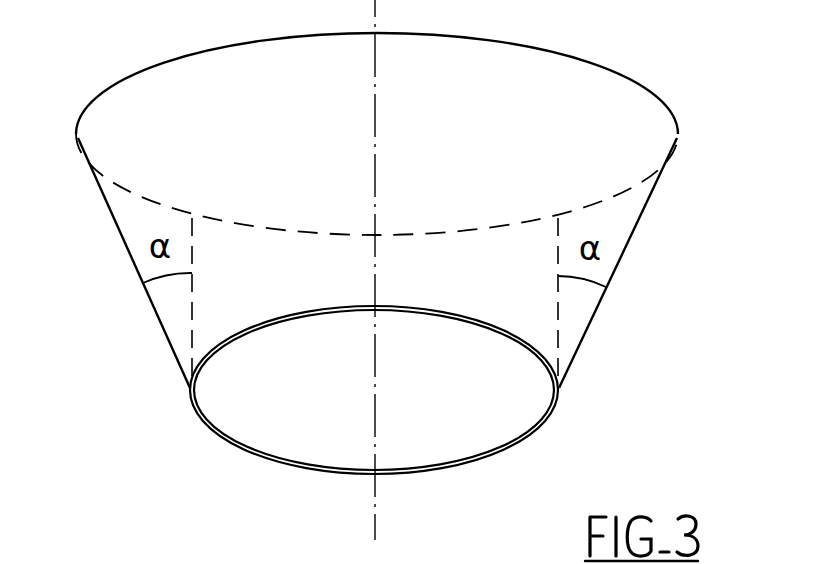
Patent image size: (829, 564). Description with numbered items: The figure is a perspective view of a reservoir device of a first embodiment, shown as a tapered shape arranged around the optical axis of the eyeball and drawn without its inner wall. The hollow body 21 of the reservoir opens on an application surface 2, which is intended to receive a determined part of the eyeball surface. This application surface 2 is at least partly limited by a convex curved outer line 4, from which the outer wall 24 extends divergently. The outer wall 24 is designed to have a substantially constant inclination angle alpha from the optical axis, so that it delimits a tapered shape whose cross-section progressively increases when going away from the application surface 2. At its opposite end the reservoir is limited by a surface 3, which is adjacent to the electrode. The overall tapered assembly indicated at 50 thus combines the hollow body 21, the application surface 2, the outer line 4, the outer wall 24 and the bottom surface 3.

The frustoconical body 50 is at (644, 275).
The surface 3 is at (586, 110).
The application surface 2 is at (266, 389).
The convex curved outer line 4 is at (346, 474).
The hollow body 21 is at (133, 219).
The outer wall 24 is at (597, 323).